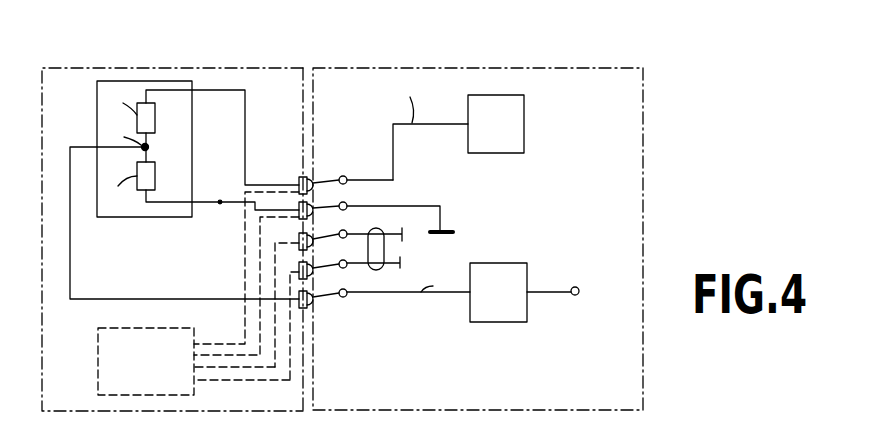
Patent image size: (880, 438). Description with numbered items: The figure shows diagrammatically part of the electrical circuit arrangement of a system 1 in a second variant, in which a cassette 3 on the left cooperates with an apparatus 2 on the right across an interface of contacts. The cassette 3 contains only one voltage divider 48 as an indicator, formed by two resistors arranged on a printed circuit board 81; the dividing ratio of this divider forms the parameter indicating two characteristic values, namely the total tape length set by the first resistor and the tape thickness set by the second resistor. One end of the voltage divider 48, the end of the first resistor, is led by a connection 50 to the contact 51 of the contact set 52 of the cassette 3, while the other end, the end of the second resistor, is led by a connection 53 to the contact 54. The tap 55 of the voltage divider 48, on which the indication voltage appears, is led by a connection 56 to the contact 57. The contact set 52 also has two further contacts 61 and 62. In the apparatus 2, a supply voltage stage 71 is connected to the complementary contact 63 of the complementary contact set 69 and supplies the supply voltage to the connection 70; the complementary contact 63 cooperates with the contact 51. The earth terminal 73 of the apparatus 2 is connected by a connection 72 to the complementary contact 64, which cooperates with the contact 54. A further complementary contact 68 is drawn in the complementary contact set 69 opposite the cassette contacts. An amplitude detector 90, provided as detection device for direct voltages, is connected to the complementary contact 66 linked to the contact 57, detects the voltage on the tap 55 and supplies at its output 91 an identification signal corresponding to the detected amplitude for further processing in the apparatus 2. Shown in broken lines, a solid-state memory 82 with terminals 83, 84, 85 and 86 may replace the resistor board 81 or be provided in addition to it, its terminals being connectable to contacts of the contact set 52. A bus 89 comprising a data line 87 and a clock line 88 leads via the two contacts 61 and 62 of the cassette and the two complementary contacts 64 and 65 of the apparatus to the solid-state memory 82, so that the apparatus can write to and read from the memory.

The system 1 is at (308, 64).
The apparatus 2 is at (530, 64).
The cassette 3 is at (188, 64).
The voltage divider 48 is at (141, 199).
The connection 50 is at (197, 91).
The contact 51 is at (299, 182).
The contact set 52 is at (263, 204).
The connection 53 is at (220, 202).
The contact 54 is at (299, 208).
The tap 55 is at (149, 147).
The connection 56 is at (148, 299).
The contact 57 is at (298, 301).
The contact 61 is at (276, 241).
The contact 62 is at (289, 272).
The complementary contact 63 is at (315, 188).
The complementary contact 64 is at (315, 244).
The complementary contact 65 is at (315, 273).
The complementary contact 66 is at (315, 302).
The terminal 68 is at (315, 213).
The complementary contact set 69 is at (324, 168).
The connection 70 is at (395, 140).
The supply voltage stage 71 is at (520, 137).
The ground line 72 is at (388, 206).
The earth terminal 73 is at (443, 223).
The printed circuit board 81 is at (97, 108).
The solid-state memory 82 is at (98, 365).
The terminal 83 is at (194, 344).
The terminal 84 is at (194, 367).
The terminal 85 is at (194, 380).
The terminal 86 is at (194, 355).
The data line 87 is at (398, 233).
The clock line 88 is at (398, 261).
The bus 89 is at (385, 250).
The amplitude detector 90 is at (510, 273).
The output 91 is at (592, 281).